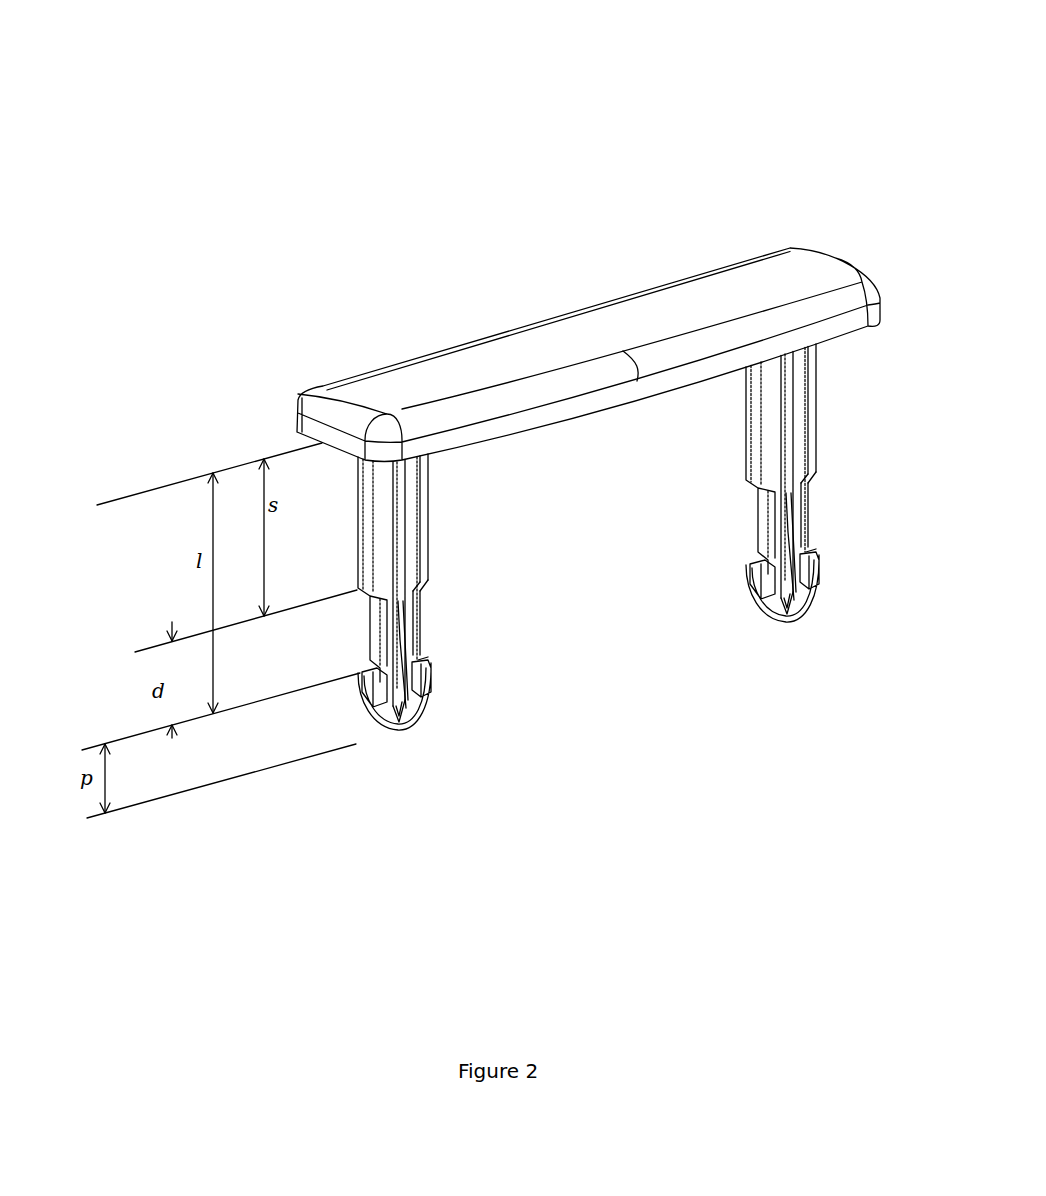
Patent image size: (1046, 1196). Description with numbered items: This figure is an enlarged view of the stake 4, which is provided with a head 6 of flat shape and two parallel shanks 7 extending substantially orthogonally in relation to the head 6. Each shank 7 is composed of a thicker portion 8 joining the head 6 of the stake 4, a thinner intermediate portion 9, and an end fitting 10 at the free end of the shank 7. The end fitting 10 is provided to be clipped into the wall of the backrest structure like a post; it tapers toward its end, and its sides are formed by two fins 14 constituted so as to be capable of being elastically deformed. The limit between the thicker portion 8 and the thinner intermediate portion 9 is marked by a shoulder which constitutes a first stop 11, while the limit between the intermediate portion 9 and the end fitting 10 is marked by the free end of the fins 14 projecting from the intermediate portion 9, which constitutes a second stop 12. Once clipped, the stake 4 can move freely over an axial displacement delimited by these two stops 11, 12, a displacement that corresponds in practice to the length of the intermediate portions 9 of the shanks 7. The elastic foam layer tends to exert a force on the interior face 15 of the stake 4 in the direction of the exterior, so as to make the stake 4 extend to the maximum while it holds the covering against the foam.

The stake 4 is at (820, 188).
The head 6 is at (588, 333).
The shank 7 is at (727, 576).
The thicker portion 8 is at (423, 485).
The thinner intermediate portion 9 is at (400, 633).
The end fitting 10 is at (399, 697).
The first stop 11 is at (427, 592).
The second stop 12 is at (425, 657).
The fins 14 is at (378, 688).
The interior face 15 is at (652, 400).